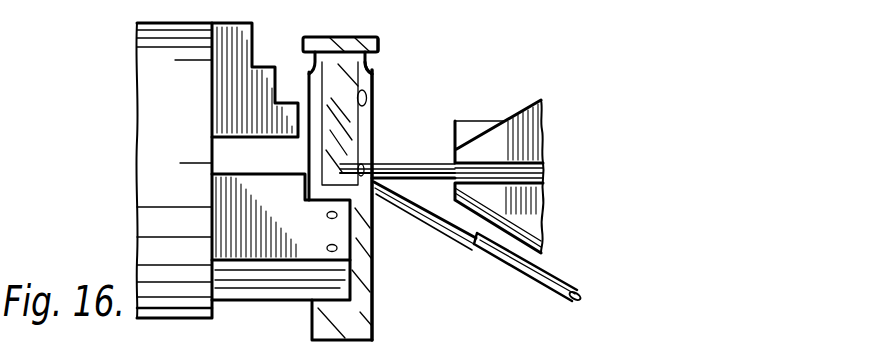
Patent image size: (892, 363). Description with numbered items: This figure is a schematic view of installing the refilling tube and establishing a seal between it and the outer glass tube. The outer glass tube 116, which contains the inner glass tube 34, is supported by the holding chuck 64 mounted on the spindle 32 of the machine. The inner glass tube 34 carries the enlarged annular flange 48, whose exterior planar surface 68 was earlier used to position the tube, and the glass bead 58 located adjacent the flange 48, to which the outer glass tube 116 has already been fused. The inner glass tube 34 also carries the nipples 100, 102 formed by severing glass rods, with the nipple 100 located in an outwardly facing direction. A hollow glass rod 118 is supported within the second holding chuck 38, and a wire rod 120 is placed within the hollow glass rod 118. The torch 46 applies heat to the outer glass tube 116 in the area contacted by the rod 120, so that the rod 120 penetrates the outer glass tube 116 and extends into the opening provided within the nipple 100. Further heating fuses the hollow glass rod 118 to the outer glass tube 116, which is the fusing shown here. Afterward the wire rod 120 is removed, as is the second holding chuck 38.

The spindle 32 is at (137, 66).
The inner glass tube 34 is at (372, 126).
The second holding chuck 38 is at (557, 150).
The torch 46 is at (551, 291).
The enlarged annular flange 48 is at (378, 45).
The bead 58 is at (373, 76).
The holding chuck 64 is at (363, 287).
The exterior planar surface 68 is at (323, 37).
The nipple 100 is at (361, 165).
The nipple 102 is at (368, 97).
The outer glass tube 116 is at (375, 327).
The hollow glass rod 118 is at (428, 182).
The wire rod 120 is at (372, 205).